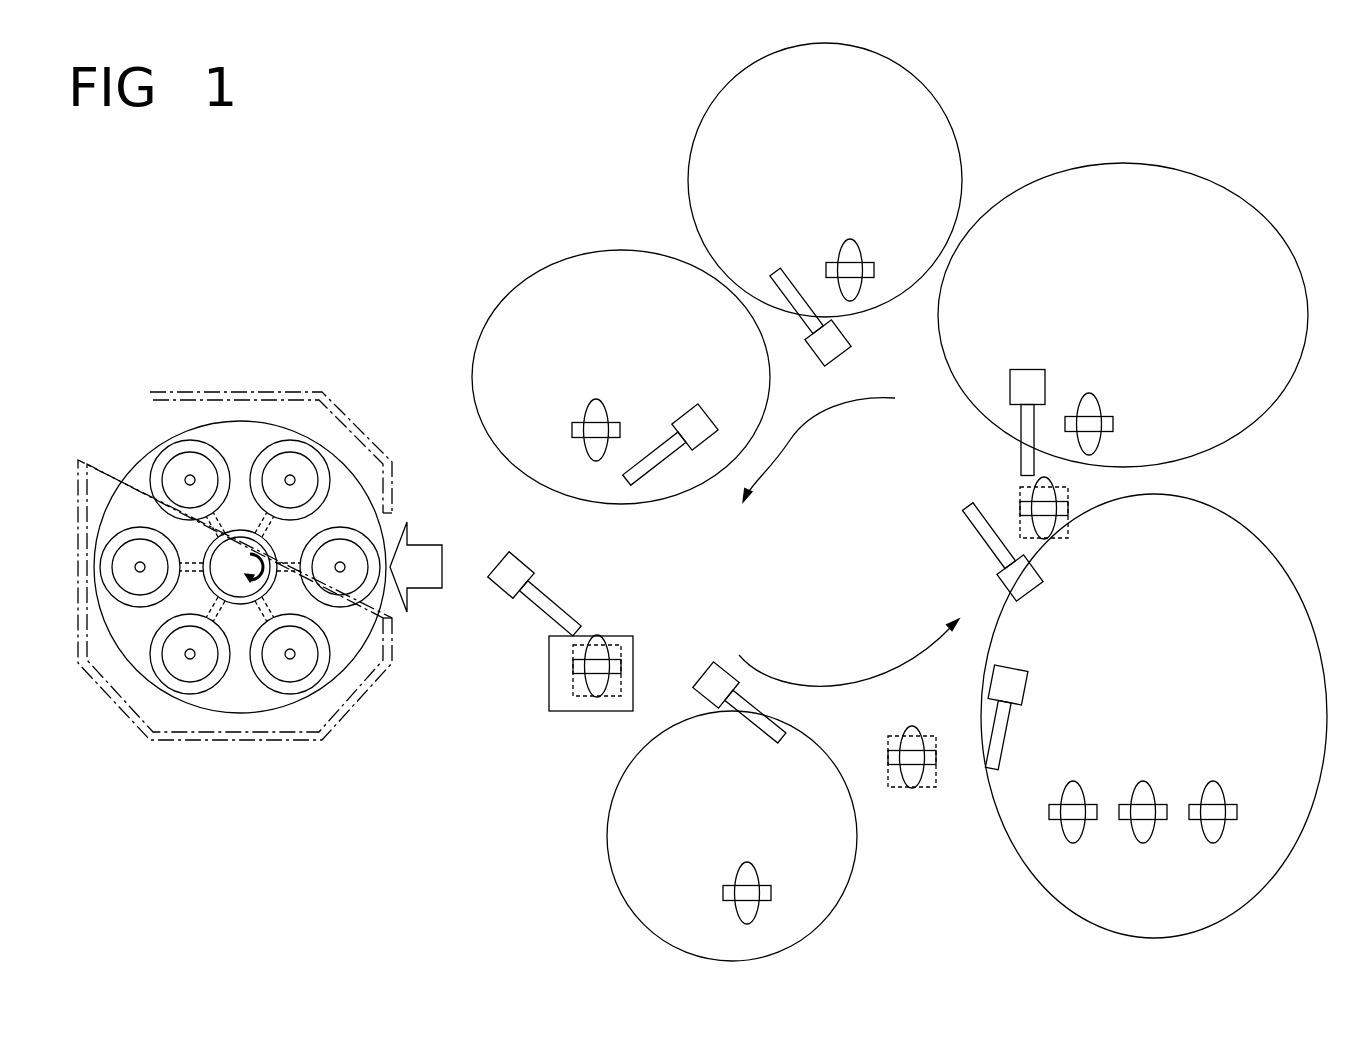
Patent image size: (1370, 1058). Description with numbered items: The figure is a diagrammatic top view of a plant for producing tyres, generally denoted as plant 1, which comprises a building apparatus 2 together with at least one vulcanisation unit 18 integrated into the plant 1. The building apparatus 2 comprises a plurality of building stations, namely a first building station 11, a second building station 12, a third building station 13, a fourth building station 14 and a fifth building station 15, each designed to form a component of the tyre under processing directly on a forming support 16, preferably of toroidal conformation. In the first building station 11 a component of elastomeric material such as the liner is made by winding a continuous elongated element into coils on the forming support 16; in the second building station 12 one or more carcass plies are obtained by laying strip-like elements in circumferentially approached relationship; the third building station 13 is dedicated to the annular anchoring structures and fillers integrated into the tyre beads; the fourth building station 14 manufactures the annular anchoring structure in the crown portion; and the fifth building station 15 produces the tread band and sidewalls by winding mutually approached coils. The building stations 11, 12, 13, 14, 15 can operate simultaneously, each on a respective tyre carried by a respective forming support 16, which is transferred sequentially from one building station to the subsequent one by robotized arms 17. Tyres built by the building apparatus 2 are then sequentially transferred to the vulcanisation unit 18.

The plant for producing tyres 1 is at (384, 165).
The building apparatus 2 is at (452, 784).
The first building station 11 is at (855, 872).
The second building station 12 is at (1288, 858).
The third building station 13 is at (1247, 202).
The fourth building station 14 is at (942, 103).
The fifth building station 15 is at (572, 252).
The forming support 16 is at (853, 250).
The robotized arm 17 is at (840, 342).
The vulcanisation unit 18 is at (249, 363).